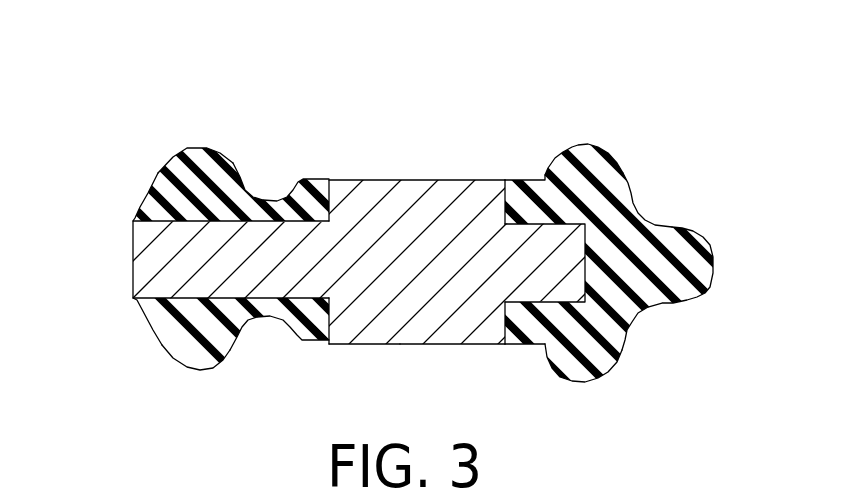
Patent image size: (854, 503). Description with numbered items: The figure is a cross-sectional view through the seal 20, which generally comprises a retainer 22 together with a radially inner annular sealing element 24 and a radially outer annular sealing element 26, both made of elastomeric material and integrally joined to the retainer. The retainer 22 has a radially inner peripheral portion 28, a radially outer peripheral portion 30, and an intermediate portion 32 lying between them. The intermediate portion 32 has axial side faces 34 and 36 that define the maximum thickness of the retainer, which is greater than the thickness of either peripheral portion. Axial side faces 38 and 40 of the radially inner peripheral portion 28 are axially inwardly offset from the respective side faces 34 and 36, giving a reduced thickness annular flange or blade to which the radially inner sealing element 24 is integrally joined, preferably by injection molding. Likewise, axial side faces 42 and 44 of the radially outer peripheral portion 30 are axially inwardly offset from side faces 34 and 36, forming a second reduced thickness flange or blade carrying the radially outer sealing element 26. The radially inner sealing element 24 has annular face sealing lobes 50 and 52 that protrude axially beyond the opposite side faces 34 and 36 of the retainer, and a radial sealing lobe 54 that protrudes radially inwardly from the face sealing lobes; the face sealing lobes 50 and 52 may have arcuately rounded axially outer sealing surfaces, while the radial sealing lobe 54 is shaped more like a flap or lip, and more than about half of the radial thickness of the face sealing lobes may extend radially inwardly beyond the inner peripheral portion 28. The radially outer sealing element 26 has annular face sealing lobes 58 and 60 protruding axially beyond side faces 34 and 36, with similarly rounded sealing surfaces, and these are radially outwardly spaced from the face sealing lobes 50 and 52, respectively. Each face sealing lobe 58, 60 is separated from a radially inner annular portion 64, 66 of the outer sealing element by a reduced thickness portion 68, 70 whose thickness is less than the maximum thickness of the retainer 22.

The seal 20 is at (115, 97).
The retainer 22 is at (443, 172).
The radially inner annular sealing element 24 is at (569, 250).
The radially outer annular sealing element 26 is at (261, 259).
The radially inner peripheral portion 28 is at (562, 288).
The radially outer peripheral portion 30 is at (140, 254).
The intermediate portion 32 is at (430, 345).
The axial side face of intermediate portion 34 is at (380, 178).
The axial side face of intermediate portion 36 is at (386, 345).
The axial side face of radially inner peripheral portion 38 is at (538, 188).
The axial side face of radially inner peripheral portion 40 is at (547, 346).
The axial side face of radially outer peripheral portion 42 is at (235, 171).
The axial side face of radially outer peripheral portion 44 is at (229, 350).
The annular face sealing lobe 50 is at (587, 144).
The annular face sealing lobe 52 is at (589, 383).
The radial sealing lobe 54 is at (713, 261).
The annular face sealing lobe 58 is at (188, 147).
The annular face sealing lobe 60 is at (191, 372).
The radially inner annular portion of outer sealing element 64 is at (311, 178).
The radially inner annular portion of outer sealing element 66 is at (313, 345).
The reduced thickness portion 68 is at (270, 200).
The reduced thickness portion 70 is at (266, 320).